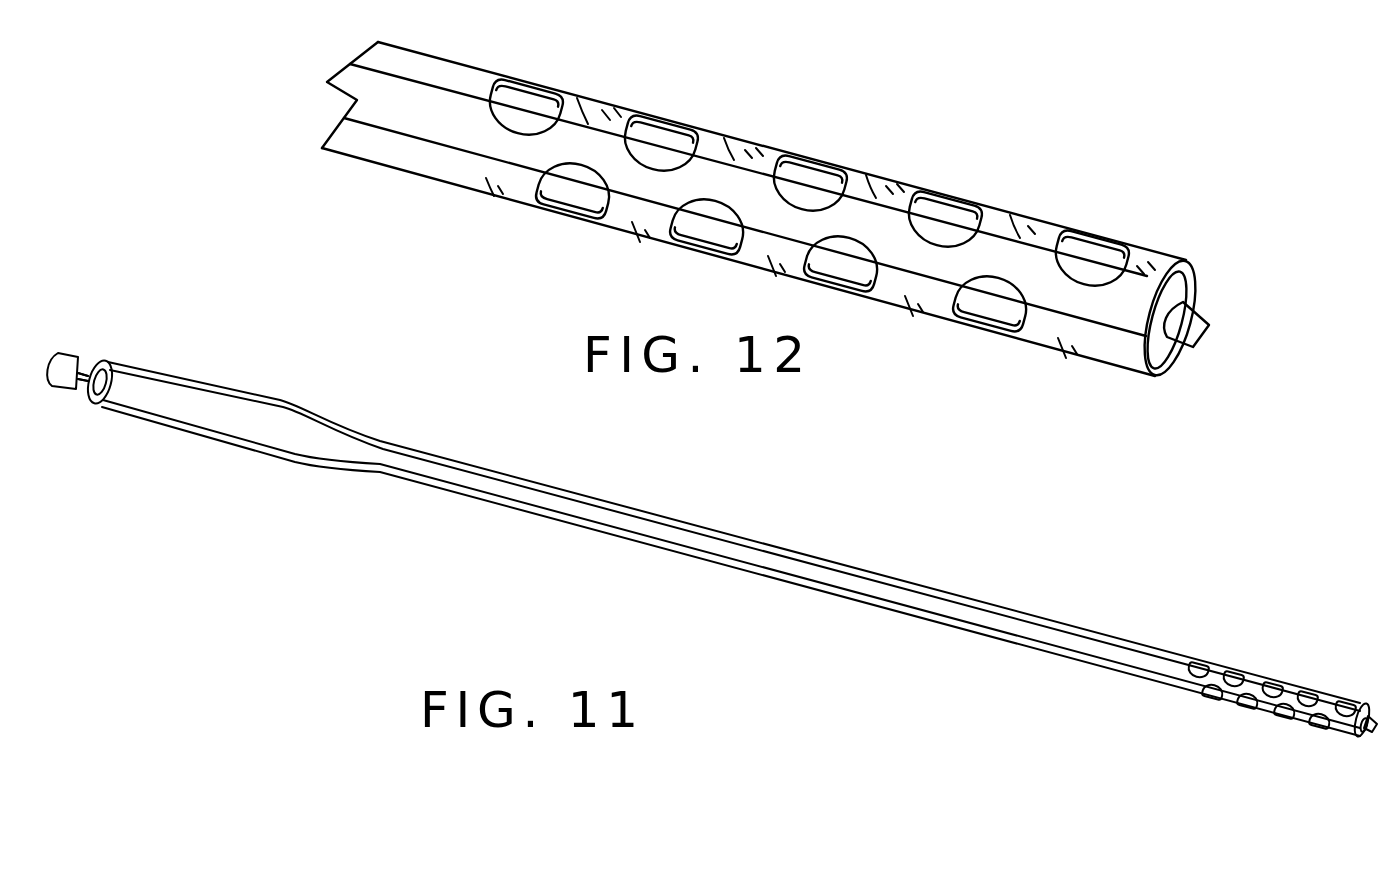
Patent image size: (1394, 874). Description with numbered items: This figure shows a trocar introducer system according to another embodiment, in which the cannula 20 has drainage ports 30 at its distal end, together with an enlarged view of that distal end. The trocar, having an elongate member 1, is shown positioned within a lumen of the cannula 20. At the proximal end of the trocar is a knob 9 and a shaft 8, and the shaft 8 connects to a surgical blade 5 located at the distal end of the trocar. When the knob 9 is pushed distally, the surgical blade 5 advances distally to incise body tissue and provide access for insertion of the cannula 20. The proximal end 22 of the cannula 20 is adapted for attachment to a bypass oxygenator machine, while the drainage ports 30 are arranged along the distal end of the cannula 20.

In FIG. 11, the elongate member 1 is at (716, 533).
In FIG. 12, the surgical blade 5 is at (1207, 340).
In FIG. 11, the surgical blade 5 is at (1377, 728).
In FIG. 11, the shaft 8 is at (78, 392).
In FIG. 11, the knob 9 is at (66, 350).
In FIG. 11, the cannula 20 is at (728, 535).
In FIG. 11, the proximal end 22 is at (108, 358).
In FIG. 12, the drainage ports 30 is at (783, 172).
In FIG. 11, the drainage ports 30 is at (1308, 697).